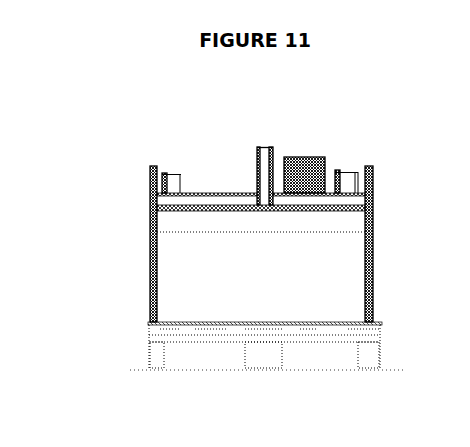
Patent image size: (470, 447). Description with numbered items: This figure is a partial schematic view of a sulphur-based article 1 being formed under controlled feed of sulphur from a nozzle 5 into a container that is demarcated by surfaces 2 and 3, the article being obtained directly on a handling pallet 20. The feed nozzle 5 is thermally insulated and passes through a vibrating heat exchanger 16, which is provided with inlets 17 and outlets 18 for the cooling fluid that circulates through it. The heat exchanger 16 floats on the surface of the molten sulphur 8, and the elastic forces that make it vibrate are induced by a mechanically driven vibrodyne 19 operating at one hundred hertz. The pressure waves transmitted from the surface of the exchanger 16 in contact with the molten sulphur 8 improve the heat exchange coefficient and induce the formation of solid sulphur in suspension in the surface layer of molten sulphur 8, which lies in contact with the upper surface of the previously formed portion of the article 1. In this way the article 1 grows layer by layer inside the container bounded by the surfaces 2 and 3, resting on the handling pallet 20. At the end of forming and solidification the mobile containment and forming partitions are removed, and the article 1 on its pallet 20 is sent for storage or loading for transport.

The article 1 is at (335, 262).
The surface 2 is at (332, 320).
The surface 3 is at (147, 243).
The nozzle 5 is at (257, 163).
The molten sulphur 8 is at (352, 222).
The vibrating heat exchanger 16 is at (227, 191).
The inlet 17 is at (165, 172).
The outlet 18 is at (355, 172).
The vibrodyne 19 is at (313, 157).
The handling pallet 20 is at (145, 353).